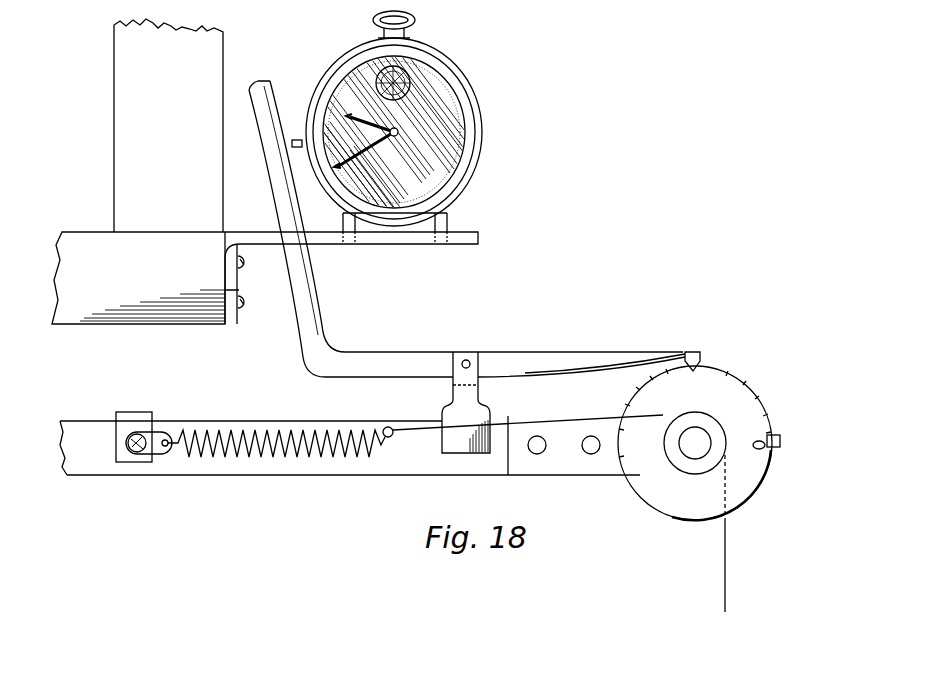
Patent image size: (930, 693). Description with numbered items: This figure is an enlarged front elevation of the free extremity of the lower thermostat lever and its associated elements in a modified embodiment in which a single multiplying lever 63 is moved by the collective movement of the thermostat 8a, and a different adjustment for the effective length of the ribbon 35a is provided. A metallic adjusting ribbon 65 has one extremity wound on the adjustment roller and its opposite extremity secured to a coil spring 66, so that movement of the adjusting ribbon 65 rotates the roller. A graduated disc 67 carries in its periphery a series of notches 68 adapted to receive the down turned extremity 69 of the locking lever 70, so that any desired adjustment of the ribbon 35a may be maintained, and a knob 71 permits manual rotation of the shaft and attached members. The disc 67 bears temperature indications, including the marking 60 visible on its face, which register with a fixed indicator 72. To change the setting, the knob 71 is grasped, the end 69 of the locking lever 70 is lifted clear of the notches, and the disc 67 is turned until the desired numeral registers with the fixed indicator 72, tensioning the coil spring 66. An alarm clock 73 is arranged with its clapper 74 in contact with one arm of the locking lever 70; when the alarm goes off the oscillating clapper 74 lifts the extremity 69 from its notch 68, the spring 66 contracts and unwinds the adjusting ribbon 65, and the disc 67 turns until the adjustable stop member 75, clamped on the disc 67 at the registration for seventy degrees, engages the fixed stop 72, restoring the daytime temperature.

The thermostat 8a is at (207, 70).
The alarm clock 73 is at (470, 166).
The clapper 74 is at (294, 140).
The locking lever 70 is at (380, 356).
The fixed indicator 72 is at (703, 360).
The down turned extremity 69 is at (687, 351).
The notches 68 is at (729, 365).
The graduated disc 67 is at (745, 416).
The scale marking 60 is at (630, 449).
The knob 71 is at (683, 472).
The adjustable stop member 75 is at (776, 447).
The ribbon 35a is at (728, 570).
The multiplying lever 63 is at (298, 462).
The coil spring 66 is at (364, 449).
The adjusting ribbon 65 is at (496, 424).